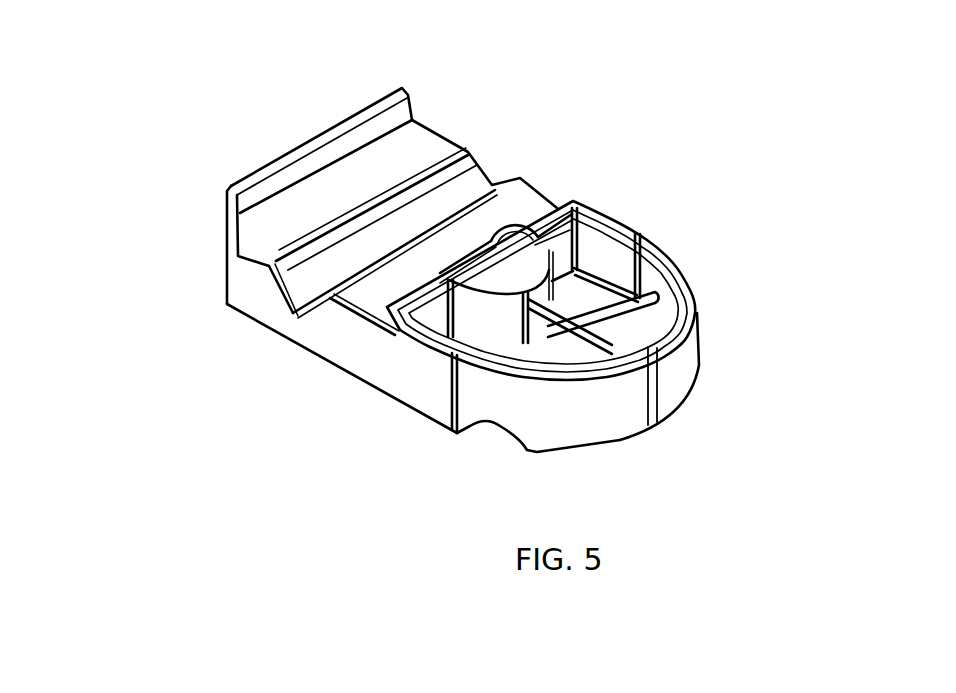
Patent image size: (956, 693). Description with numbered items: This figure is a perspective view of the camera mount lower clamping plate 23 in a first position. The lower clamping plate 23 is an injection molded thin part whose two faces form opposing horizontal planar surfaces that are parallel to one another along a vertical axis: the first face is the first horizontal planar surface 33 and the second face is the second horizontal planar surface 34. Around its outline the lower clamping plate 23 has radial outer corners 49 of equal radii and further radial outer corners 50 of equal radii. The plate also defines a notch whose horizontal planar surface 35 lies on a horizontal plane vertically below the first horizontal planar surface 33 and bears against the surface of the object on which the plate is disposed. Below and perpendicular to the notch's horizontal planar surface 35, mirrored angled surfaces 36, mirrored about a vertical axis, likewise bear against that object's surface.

The lower clamping plate 23 is at (252, 104).
The first horizontal planar surface 33 is at (618, 212).
The second horizontal planar surface 34 is at (379, 394).
The notch horizontal planar surface 35 is at (503, 215).
The mirrored angled surfaces 36 is at (302, 317).
The radial outer corners 49 is at (393, 87).
The radial outer corners 50 is at (677, 358).